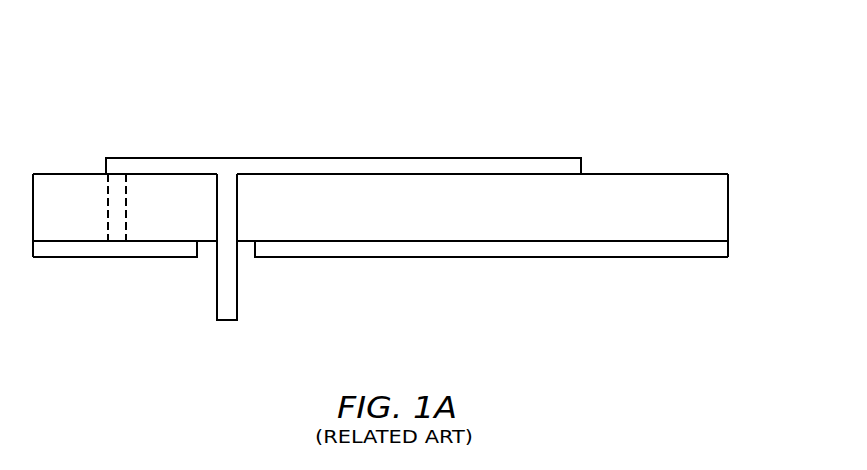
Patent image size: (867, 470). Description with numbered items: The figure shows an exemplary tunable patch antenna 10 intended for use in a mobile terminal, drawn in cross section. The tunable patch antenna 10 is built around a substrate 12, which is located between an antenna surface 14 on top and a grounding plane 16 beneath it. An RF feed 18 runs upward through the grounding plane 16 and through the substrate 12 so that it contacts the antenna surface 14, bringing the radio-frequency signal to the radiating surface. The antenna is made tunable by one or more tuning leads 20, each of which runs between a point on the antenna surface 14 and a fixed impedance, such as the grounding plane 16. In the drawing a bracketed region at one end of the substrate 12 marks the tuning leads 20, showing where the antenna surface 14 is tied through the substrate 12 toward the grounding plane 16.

The tunable patch antenna 10 is at (393, 110).
The substrate 12 is at (717, 229).
The antenna surface 14 is at (557, 157).
The grounding plane 16 is at (85, 258).
The RF feed 18 is at (238, 312).
The tuning leads 20 is at (133, 183).